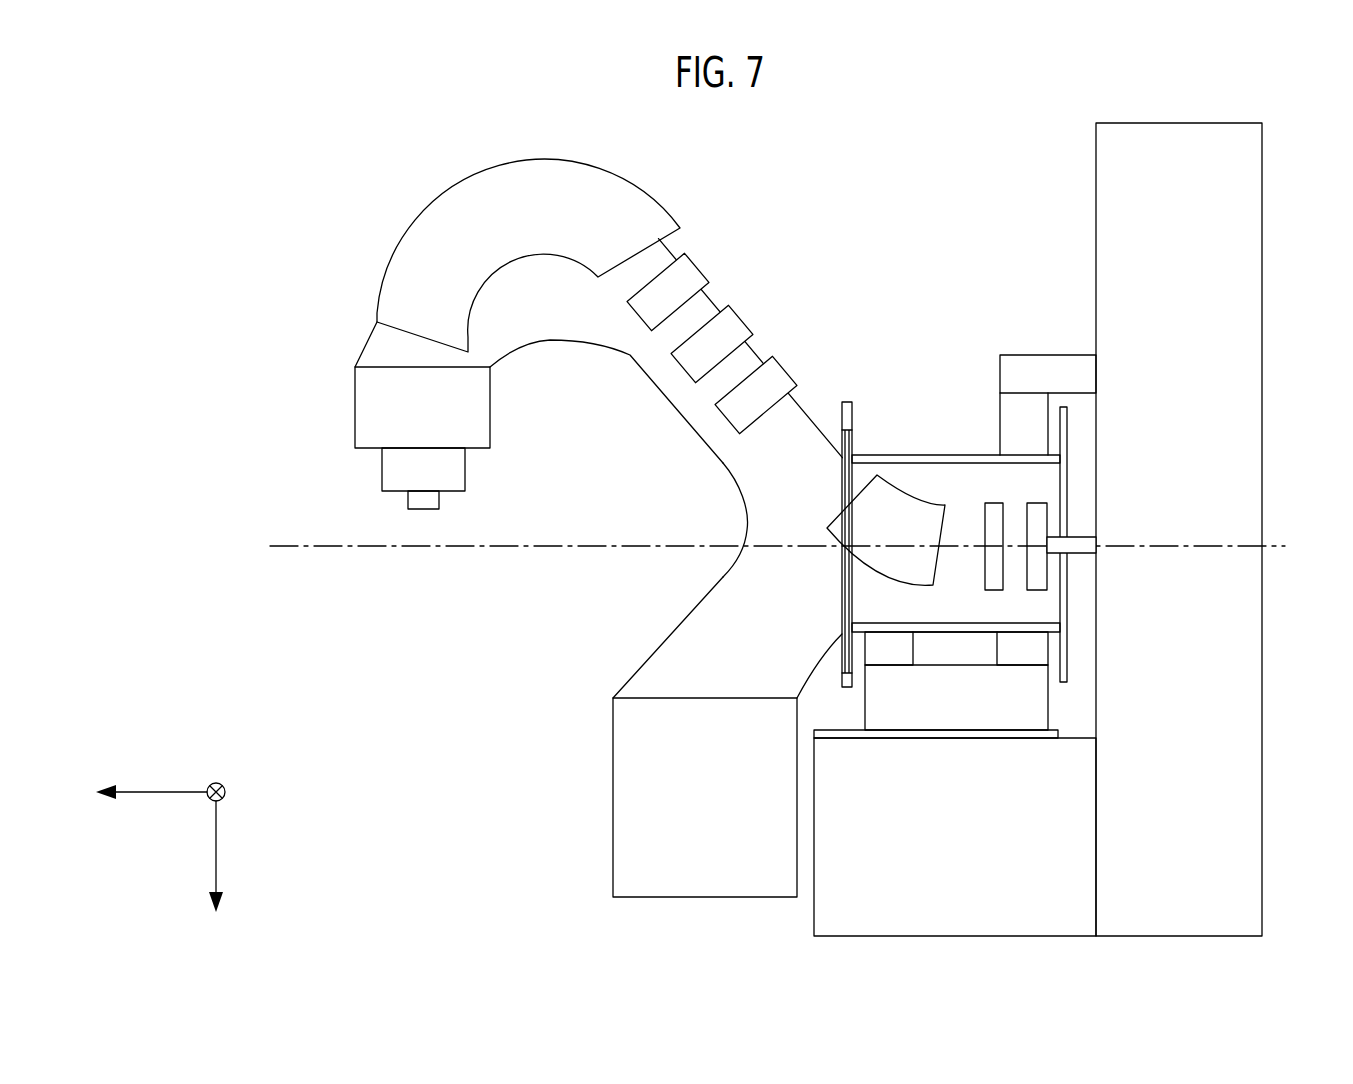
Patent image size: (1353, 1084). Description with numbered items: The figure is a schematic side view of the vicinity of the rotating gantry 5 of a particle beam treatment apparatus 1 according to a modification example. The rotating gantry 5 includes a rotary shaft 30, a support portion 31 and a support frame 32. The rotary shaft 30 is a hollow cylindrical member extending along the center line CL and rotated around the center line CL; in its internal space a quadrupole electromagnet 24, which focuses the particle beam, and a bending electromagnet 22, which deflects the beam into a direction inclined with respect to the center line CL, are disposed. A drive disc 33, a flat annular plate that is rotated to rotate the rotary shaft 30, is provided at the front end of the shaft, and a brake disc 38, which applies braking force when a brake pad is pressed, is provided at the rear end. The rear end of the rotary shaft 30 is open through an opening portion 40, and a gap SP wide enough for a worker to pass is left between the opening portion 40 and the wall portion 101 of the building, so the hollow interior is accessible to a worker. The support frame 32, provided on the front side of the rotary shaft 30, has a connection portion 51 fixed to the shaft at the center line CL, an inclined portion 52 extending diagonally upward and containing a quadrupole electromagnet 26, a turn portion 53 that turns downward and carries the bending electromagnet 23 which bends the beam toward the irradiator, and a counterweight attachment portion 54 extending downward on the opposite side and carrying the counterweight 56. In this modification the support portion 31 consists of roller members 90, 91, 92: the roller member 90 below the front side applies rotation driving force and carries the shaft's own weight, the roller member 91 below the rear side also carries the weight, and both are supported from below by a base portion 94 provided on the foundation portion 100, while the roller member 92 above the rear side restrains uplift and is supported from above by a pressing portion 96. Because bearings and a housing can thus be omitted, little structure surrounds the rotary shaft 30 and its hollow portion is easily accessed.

The particle beam treatment apparatus 1 is at (155, 185).
The rotating gantry 5 is at (946, 193).
The bending electromagnet 22 is at (870, 553).
The bending electromagnet 23 is at (475, 200).
The quadrupole electromagnet 24 is at (1033, 575).
The quadrupole electromagnet 26 is at (795, 373).
The rotary shaft 30 is at (930, 455).
The support portion 31 is at (972, 553).
The support frame 32 is at (660, 629).
The drive disc 33 is at (850, 401).
The brake disc 38 is at (1065, 405).
The opening portion 40 is at (1085, 502).
The connection portion 51 is at (760, 503).
The inclined portion 52 is at (673, 377).
The turn portion 53 is at (553, 325).
The counterweight attachment portion 54 is at (703, 622).
The counterweight 56 is at (637, 784).
The roller member 90 is at (897, 655).
The roller member 91 is at (1017, 653).
The roller member 92 is at (1000, 423).
The base portion 94 is at (955, 715).
The pressing portion 96 is at (1020, 356).
The foundation portion 100 is at (832, 918).
The wall portion 101 is at (1235, 310).
The gap SP is at (1087, 432).
The center line CL is at (339, 550).